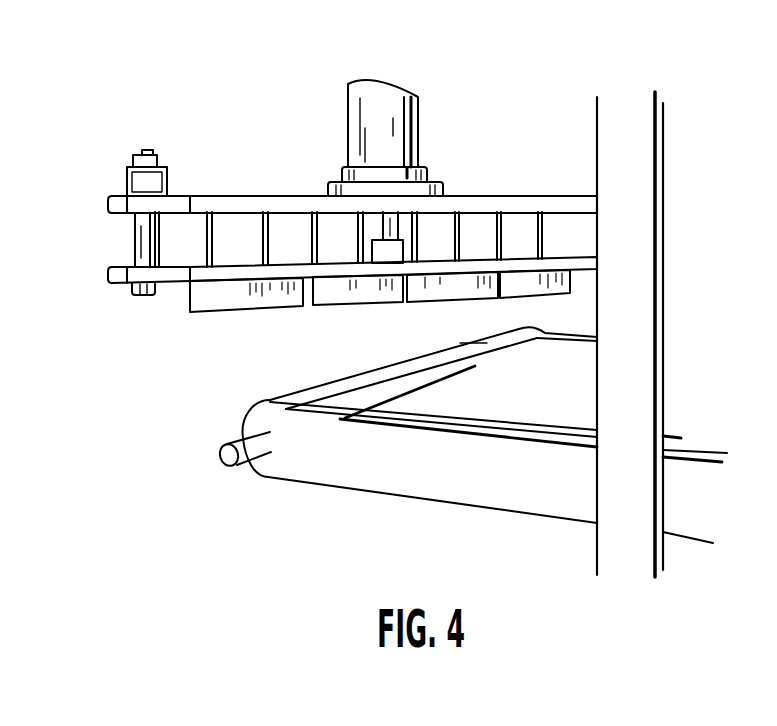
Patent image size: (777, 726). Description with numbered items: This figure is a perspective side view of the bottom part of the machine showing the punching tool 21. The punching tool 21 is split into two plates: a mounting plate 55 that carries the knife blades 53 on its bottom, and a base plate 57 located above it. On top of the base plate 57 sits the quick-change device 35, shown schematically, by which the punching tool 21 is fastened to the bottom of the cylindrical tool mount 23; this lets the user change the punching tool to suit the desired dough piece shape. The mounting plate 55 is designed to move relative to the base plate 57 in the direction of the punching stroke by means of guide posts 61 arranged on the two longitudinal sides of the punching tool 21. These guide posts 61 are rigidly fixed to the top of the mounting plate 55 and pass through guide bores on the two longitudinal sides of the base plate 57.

The punching tool 21 is at (170, 324).
The tool mount 23 is at (385, 100).
The quick-change device 35 is at (362, 190).
The knife blades 53 is at (320, 300).
The mounting plate 55 is at (357, 284).
The base plate 57 is at (510, 207).
The guide posts 61 is at (140, 247).